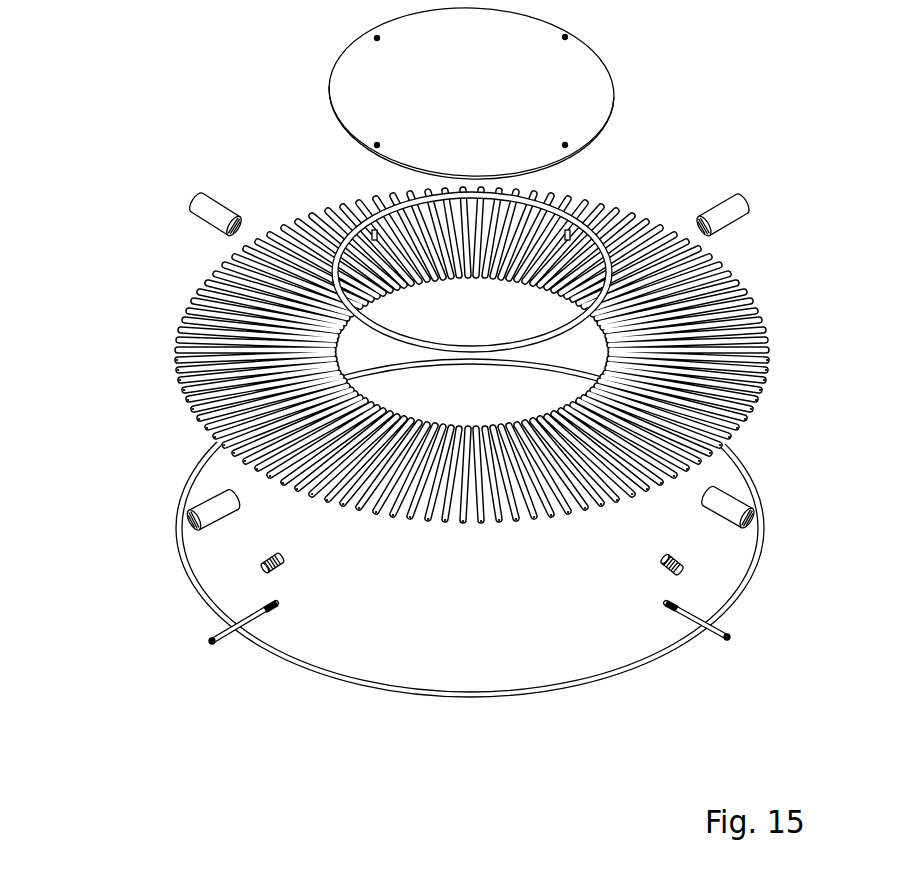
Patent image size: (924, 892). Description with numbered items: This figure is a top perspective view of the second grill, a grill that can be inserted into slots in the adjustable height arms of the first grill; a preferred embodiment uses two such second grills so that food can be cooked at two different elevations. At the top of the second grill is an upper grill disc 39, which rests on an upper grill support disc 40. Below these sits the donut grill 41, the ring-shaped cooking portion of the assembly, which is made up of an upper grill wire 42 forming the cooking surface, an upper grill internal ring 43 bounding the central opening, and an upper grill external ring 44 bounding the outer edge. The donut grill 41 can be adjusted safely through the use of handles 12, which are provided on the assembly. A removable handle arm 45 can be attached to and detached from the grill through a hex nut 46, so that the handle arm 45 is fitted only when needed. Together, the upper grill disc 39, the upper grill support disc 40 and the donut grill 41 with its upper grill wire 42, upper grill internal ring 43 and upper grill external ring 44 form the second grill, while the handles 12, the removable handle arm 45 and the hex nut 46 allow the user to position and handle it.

The handles 12 is at (716, 229).
The upper grill disc 39 is at (535, 78).
The upper grill support disc 40 is at (370, 232).
The donut grill 41 is at (620, 204).
The upper grill wire 42 is at (752, 305).
The upper grill internal ring 43 is at (760, 363).
The upper grill external ring 44 is at (493, 698).
The removable handle arm 45 is at (209, 642).
The hex nut 46 is at (263, 556).